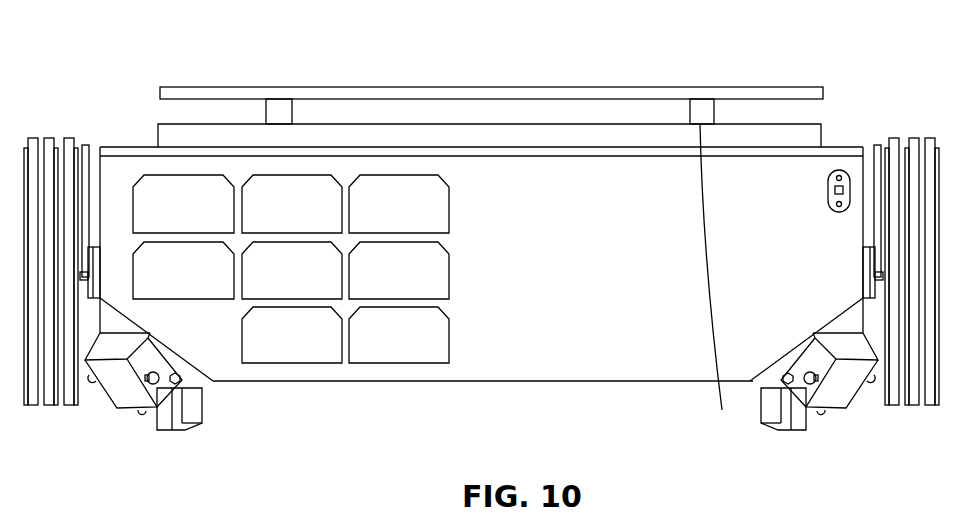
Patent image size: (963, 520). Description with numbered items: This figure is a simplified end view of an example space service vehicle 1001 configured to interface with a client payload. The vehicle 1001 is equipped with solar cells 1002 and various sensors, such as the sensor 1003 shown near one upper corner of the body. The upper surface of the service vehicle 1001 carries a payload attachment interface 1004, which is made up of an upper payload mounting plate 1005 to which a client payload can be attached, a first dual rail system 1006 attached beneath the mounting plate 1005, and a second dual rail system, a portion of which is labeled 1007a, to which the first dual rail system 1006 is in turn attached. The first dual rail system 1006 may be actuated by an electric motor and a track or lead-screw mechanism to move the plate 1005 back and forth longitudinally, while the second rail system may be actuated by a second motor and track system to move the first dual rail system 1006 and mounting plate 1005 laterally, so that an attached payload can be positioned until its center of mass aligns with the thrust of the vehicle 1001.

The space service vehicle 1001 is at (573, 383).
The solar cells 1002 is at (305, 343).
The sensor 1003 is at (846, 172).
The payload attachment interface 1004 is at (524, 88).
The upper payload mounting plate 1005 is at (350, 85).
The first dual rail system 1006 is at (283, 110).
The plate 1007a is at (777, 137).